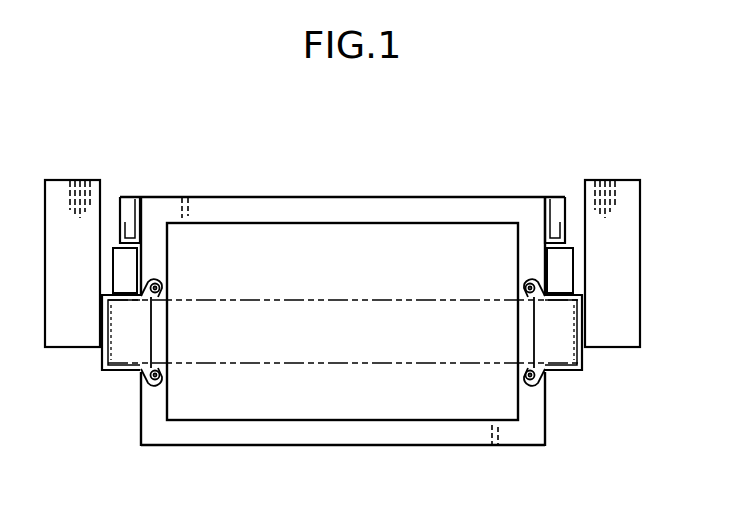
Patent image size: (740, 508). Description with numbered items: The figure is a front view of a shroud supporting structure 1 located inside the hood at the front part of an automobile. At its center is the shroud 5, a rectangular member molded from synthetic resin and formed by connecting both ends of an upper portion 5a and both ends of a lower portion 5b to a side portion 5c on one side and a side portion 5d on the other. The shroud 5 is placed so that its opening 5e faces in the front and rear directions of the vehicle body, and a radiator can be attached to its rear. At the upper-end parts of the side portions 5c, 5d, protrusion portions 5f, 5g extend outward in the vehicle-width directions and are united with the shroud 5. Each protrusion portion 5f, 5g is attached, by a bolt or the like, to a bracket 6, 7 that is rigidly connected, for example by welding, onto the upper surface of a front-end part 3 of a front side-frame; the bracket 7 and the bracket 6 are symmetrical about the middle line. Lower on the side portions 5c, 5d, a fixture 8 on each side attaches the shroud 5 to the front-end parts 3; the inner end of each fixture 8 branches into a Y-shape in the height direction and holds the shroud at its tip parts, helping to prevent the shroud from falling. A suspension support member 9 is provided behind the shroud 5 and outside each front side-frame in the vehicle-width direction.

The shroud supporting structure 1 is at (348, 283).
The front-end part 3 is at (115, 372).
The shroud 5 is at (358, 301).
The upper portion 5a is at (280, 197).
The lower portion 5b is at (343, 446).
The side portion 5c is at (533, 413).
The side portion 5d is at (150, 432).
The opening 5e is at (212, 245).
The protrusion portion 5f is at (550, 198).
The protrusion portion 5g is at (132, 198).
The bracket 6 is at (573, 273).
The bracket 7 is at (113, 268).
The fixture 8 is at (118, 333).
The suspension support member 9 is at (63, 180).